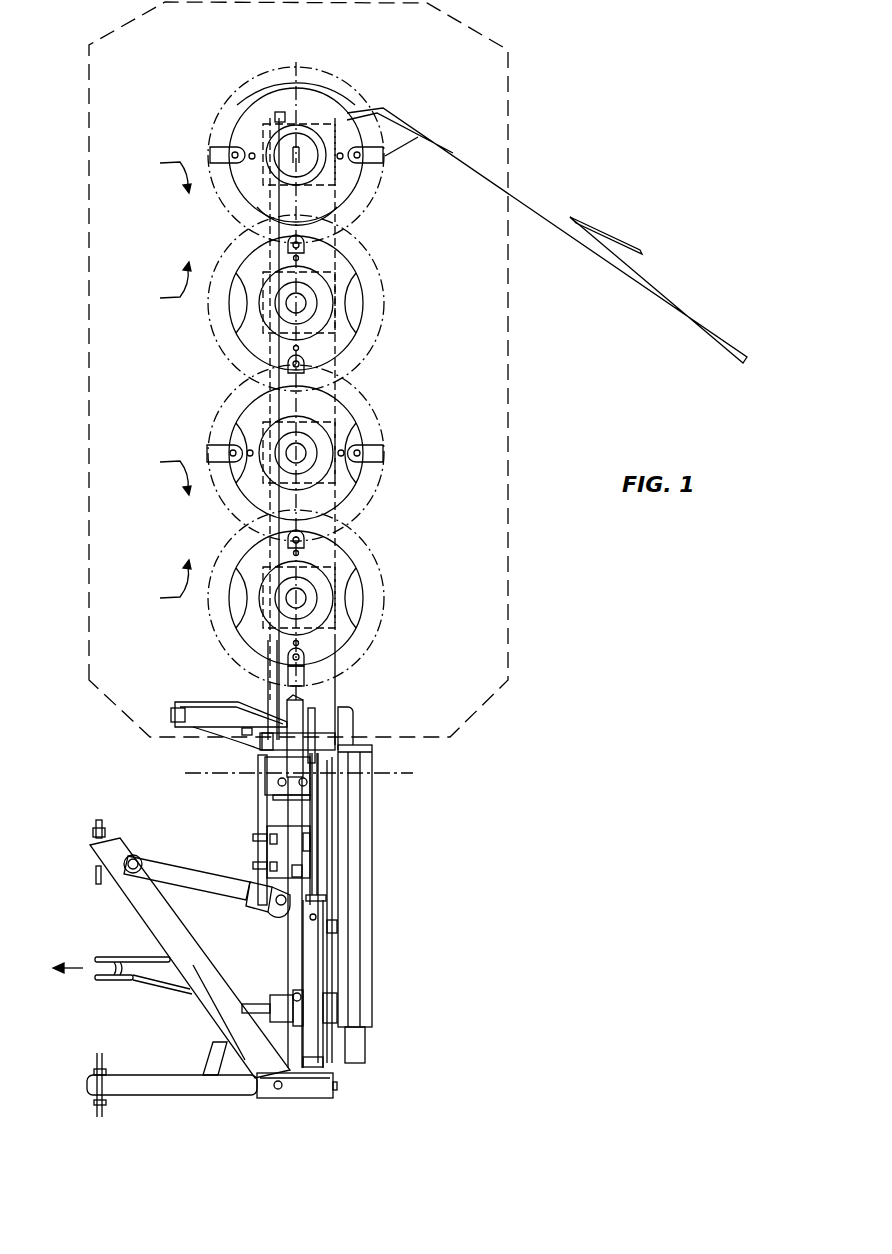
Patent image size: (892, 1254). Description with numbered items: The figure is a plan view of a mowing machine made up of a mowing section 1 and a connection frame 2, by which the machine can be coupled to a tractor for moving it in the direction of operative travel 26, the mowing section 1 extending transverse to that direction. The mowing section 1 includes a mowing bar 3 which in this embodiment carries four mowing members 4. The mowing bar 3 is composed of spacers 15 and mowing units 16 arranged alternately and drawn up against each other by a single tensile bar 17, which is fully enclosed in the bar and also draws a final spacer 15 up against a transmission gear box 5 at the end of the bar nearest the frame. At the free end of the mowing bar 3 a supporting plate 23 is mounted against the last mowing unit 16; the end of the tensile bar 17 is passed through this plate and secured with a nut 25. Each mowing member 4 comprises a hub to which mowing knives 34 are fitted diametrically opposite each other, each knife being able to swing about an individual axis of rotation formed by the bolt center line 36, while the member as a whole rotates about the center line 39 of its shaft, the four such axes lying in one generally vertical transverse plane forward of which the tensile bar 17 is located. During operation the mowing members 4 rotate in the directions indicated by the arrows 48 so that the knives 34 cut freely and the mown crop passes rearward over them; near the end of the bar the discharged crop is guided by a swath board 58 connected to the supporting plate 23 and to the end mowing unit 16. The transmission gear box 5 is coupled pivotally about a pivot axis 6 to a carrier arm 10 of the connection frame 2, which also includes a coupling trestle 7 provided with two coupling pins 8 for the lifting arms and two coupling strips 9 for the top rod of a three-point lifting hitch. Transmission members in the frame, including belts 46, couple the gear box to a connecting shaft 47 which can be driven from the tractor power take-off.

The mowing section 1 is at (188, 403).
The connection frame 2 is at (428, 983).
The mowing bar 3 is at (337, 702).
The mowing member 4 is at (232, 213).
The transmission gear box 5 is at (262, 742).
The pivot axis 6 is at (373, 777).
The coupling trestle 7 is at (165, 936).
The coupling pins 8 is at (104, 828).
The coupling strips 9 is at (118, 965).
The carrier arm 10 is at (287, 947).
The spacer 15 is at (337, 513).
The mowing unit 16 is at (337, 477).
The tensile bar 17 is at (272, 668).
The supporting plate 23 is at (313, 100).
The nut 25 is at (245, 102).
The direction of operative travel 26 is at (83, 968).
The mowing knives 34 is at (210, 152).
The center line of bolt 36 is at (355, 433).
The center line of mowing member shaft 39 is at (298, 303).
The belts 46 is at (366, 1049).
The connecting shaft 47 is at (255, 1003).
The arrows 48 is at (161, 383).
The swath board 58 is at (541, 194).